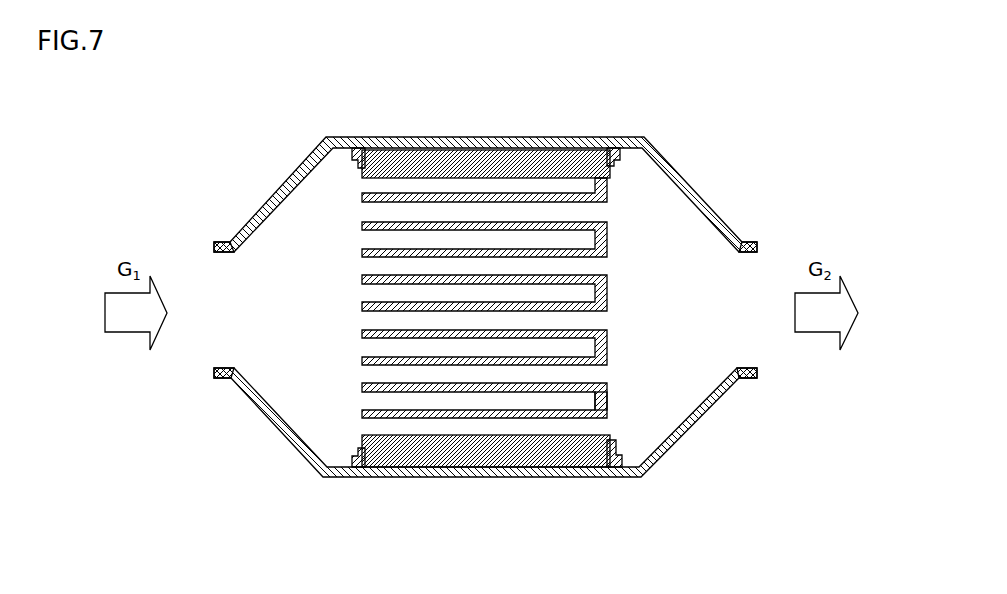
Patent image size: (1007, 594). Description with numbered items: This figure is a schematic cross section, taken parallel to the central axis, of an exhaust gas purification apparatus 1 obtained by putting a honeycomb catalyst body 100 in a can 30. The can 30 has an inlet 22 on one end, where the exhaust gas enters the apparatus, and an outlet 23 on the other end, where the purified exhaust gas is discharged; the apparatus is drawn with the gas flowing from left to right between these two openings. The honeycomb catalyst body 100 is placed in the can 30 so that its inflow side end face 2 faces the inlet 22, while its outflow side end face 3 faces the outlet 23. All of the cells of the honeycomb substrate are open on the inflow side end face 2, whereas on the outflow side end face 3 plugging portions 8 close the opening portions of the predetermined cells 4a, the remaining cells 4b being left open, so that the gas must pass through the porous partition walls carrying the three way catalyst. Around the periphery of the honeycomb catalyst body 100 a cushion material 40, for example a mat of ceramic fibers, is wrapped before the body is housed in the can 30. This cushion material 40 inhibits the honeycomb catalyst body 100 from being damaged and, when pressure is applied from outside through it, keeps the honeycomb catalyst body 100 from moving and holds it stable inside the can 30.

The exhaust gas purification apparatus 1 is at (711, 110).
The can 30 is at (274, 175).
The inlet 22 is at (224, 252).
The outlet 23 is at (744, 254).
The cushion material 40 is at (474, 138).
The honeycomb catalyst body 100 is at (517, 305).
The inflow side end face 2 is at (350, 278).
The plugging portions 8 is at (608, 247).
The outflow side end face 3 is at (608, 333).
The plate portion 4b is at (600, 372).
The predetermined cells 4a is at (585, 399).